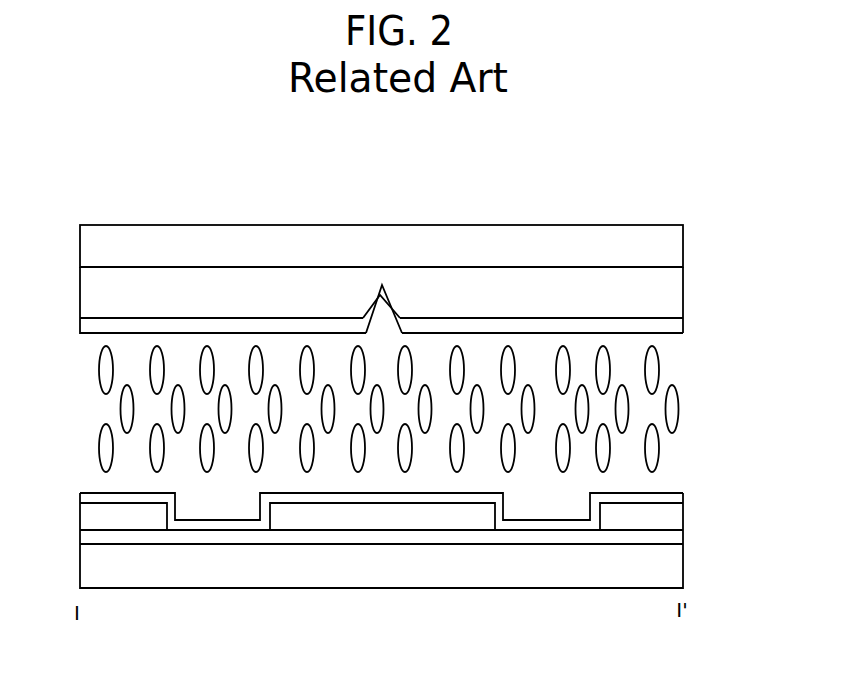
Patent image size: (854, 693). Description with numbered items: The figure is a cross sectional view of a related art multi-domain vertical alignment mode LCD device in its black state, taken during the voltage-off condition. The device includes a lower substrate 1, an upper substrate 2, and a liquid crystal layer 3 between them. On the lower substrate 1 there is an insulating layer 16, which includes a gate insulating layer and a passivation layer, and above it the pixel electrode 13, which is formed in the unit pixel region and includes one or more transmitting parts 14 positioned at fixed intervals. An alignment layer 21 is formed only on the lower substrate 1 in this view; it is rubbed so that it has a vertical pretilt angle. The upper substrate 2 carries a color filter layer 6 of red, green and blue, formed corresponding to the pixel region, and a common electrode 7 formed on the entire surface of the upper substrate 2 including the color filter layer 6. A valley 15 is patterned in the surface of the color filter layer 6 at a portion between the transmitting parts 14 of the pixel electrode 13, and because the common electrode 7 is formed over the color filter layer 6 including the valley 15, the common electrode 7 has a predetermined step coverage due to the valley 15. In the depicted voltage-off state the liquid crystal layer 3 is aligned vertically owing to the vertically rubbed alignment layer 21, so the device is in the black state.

The lower substrate 1 is at (683, 571).
The upper substrate 2 is at (683, 247).
The liquid crystal layer 3 is at (679, 410).
The color filter layer 6 is at (683, 292).
The common electrode 7 is at (683, 323).
The pixel electrode 13 is at (683, 517).
The transmitting parts 14 is at (225, 507).
The valley 15 is at (381, 322).
The insulating layer 16 is at (683, 539).
The alignment layer 21 is at (683, 495).